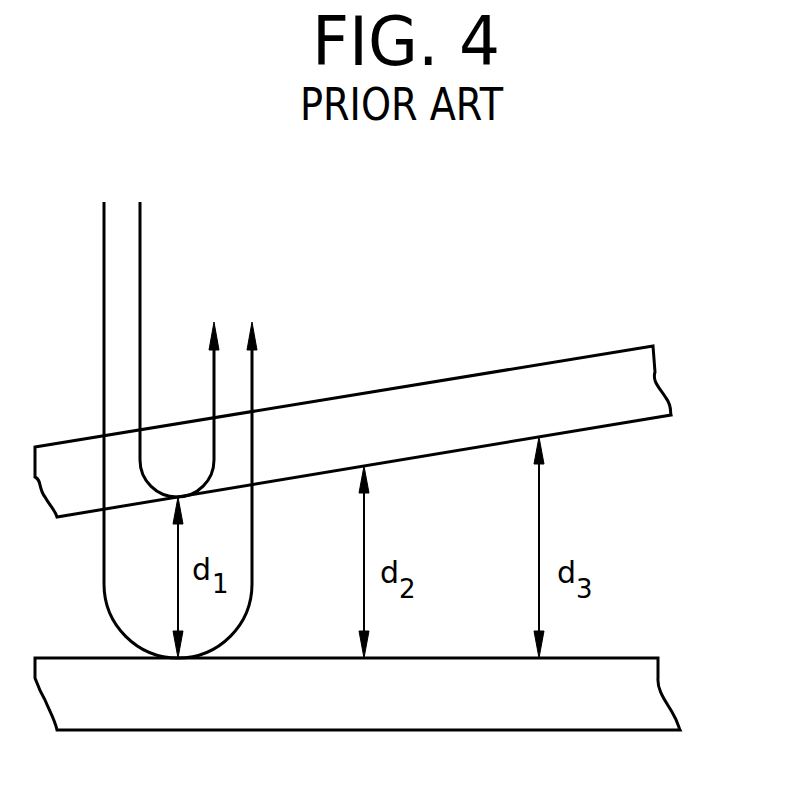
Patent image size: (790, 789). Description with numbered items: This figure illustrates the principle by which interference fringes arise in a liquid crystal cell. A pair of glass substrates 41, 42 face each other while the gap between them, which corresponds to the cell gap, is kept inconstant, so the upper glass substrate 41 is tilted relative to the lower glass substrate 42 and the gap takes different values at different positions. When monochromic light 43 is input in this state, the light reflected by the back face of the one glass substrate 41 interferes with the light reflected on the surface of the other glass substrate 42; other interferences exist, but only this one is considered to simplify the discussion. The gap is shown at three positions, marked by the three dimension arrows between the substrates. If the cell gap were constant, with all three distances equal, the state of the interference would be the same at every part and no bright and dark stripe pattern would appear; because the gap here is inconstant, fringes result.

The glass substrate 41 is at (432, 395).
The glass substrate 42 is at (608, 678).
The monochromic light 43 is at (180, 394).